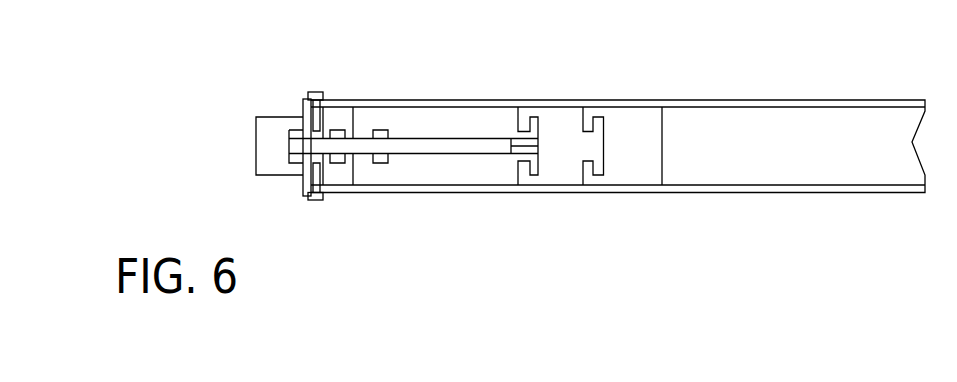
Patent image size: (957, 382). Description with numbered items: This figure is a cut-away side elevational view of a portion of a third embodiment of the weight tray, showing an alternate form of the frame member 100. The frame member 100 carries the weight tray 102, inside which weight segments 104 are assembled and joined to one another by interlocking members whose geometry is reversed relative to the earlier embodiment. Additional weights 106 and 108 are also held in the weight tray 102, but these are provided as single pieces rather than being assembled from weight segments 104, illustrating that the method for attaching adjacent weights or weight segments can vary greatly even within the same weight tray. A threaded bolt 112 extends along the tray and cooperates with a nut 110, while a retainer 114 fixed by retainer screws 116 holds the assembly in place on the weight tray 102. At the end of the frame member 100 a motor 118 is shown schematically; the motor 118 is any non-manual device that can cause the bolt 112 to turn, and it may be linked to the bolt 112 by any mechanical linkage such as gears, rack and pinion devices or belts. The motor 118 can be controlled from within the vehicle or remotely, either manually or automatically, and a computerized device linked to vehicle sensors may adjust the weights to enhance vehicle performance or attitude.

The frame member 100 is at (622, 83).
The weight tray 102 is at (782, 99).
The weight segments 104 is at (482, 122).
The additional weight 106 is at (560, 173).
The additional weight 108 is at (633, 168).
The nut 110 is at (383, 130).
The bolt 112 is at (427, 147).
The retainer 114 is at (303, 117).
The retainer screws 116 is at (321, 95).
The motor 118 is at (263, 150).